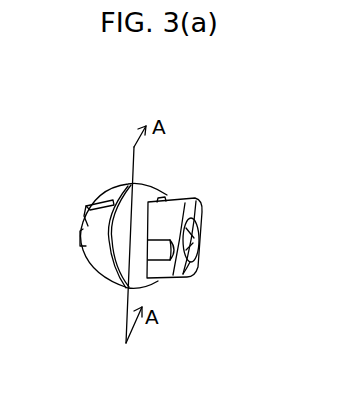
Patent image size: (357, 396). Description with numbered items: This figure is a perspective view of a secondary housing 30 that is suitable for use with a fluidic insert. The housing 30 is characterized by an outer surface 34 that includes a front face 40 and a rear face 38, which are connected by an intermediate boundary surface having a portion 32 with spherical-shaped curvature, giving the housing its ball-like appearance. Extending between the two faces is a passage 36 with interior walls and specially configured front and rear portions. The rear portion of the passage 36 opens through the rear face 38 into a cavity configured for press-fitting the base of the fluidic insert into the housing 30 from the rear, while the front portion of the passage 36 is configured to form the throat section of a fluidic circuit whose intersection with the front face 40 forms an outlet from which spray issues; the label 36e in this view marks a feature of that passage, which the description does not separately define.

The secondary housing 30 is at (93, 170).
The portion with spherical-shaped curvature 32 is at (145, 185).
The outer surface 34 is at (183, 196).
The passage 36 is at (186, 239).
The opening edge 36e is at (192, 245).
The rear face 38 is at (82, 242).
The front face 40 is at (188, 262).